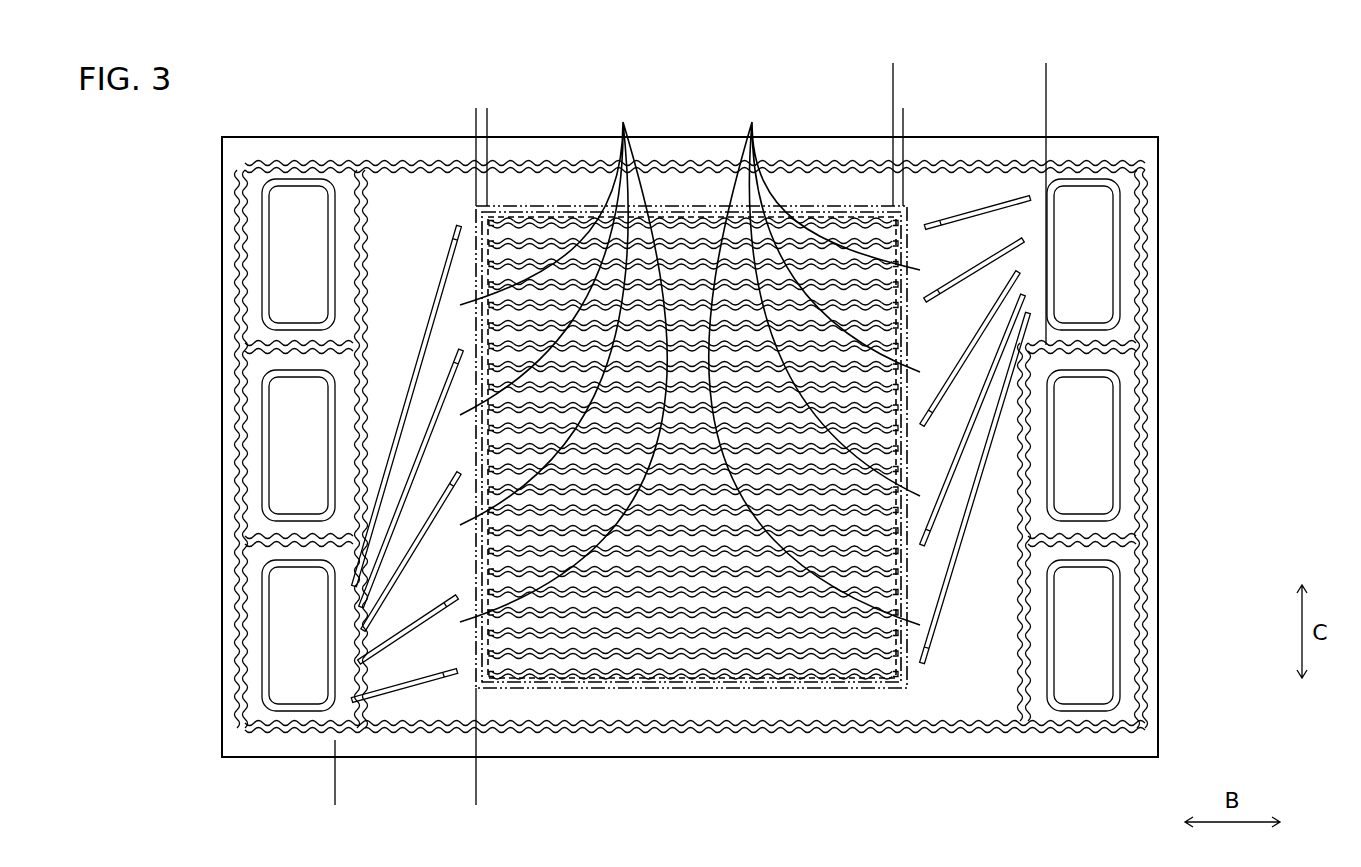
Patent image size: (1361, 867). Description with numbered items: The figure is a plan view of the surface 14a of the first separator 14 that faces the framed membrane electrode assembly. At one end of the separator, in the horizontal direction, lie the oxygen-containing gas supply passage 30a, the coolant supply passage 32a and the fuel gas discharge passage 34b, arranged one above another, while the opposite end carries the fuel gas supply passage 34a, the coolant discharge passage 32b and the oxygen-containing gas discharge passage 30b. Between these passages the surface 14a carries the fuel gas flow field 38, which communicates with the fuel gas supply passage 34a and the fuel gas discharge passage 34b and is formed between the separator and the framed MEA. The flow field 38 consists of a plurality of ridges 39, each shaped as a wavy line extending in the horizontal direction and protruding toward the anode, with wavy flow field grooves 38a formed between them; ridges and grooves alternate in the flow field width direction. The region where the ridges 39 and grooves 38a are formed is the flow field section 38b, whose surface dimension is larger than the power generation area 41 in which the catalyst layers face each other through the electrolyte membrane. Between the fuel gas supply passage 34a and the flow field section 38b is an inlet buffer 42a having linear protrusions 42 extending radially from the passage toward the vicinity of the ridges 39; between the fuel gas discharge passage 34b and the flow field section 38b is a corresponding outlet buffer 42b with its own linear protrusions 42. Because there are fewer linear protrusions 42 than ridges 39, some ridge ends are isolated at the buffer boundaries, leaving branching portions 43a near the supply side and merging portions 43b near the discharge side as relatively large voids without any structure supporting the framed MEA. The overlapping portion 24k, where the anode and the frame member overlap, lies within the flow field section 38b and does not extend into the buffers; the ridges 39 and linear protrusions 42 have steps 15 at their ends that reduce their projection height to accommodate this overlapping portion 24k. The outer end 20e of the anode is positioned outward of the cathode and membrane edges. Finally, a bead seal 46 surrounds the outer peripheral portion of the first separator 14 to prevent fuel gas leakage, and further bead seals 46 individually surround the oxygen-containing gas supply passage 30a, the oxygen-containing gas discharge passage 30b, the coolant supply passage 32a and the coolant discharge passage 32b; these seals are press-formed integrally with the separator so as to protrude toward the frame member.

The first separator 14 is at (1097, 125).
The surface 14a is at (684, 152).
The steps 15 is at (442, 292).
The outer end of the anode 20e is at (522, 208).
The overlapping portion 24k is at (495, 121).
The oxygen-containing gas supply passage 30a is at (280, 268).
The oxygen-containing gas discharge passage 30b is at (1065, 649).
The coolant supply passage 32a is at (280, 459).
The coolant discharge passage 32b is at (1065, 459).
The fuel gas supply passage 34a is at (1065, 268).
The fuel gas discharge passage 34b is at (280, 649).
The fuel gas flow field 38 is at (546, 717).
The wavy flow field grooves 38a is at (640, 642).
The flow field section 38b is at (852, 688).
The ridges 39 is at (727, 652).
The power generation area 41 is at (780, 688).
The linear protrusions 42 is at (398, 691).
The inlet buffer 42a is at (893, 70).
The outlet buffer 42b is at (335, 800).
The branching portions 43a is at (814, 358).
The merging portions 43b is at (563, 357).
The bead seal 46 is at (288, 165).